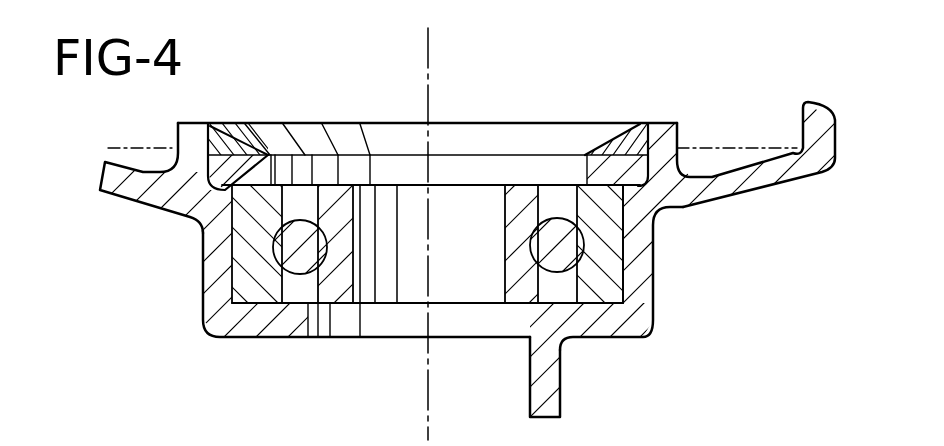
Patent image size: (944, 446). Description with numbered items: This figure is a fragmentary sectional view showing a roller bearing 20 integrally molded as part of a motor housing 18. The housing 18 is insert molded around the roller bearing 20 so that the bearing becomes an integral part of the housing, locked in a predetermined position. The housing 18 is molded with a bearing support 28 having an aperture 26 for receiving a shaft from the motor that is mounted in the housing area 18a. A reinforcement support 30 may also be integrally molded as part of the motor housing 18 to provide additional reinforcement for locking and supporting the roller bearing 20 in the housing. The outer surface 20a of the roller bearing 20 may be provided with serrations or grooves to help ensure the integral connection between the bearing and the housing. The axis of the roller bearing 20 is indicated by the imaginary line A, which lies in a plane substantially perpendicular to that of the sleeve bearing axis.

The motor housing 18 is at (825, 168).
The housing area 18a is at (660, 278).
The roller bearing 20 is at (603, 282).
The outer surface 20a is at (530, 306).
The aperture 26 is at (410, 262).
The bearing support 28 is at (255, 322).
The reinforcement support 30 is at (233, 127).
The axis A is at (438, 42).